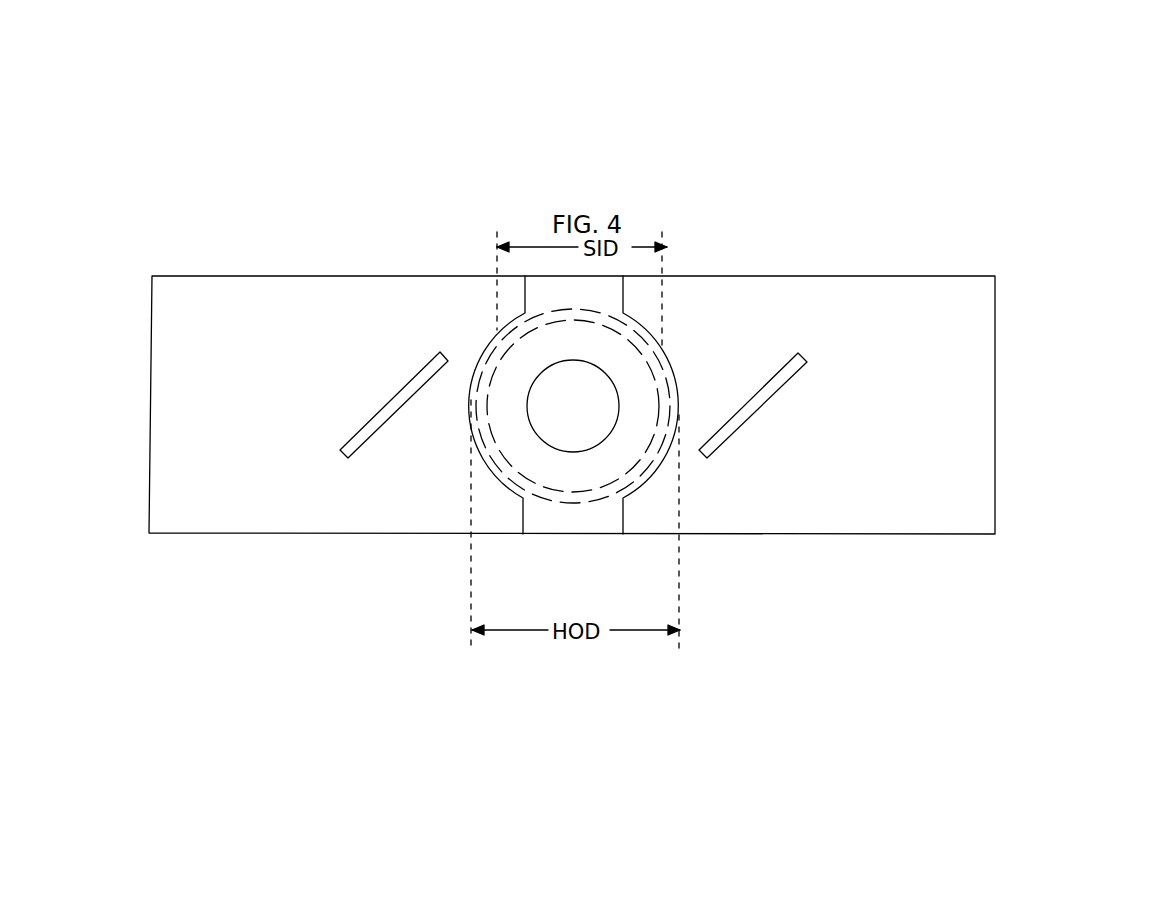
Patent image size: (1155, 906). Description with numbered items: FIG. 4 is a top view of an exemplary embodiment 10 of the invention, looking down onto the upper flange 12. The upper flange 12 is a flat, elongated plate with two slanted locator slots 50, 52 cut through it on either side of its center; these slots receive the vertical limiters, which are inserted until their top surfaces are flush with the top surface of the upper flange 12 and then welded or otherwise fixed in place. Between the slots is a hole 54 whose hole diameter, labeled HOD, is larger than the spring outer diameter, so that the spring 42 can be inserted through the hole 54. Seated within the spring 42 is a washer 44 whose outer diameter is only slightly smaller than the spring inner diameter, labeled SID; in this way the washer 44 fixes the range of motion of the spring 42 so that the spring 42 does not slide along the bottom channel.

The strap assembly 10 is at (965, 113).
The upper flange 12 is at (943, 338).
The spring 42 is at (567, 310).
The washer 44 is at (617, 353).
The locator slot 50 is at (762, 403).
The locator slot 52 is at (382, 408).
The hole 54 is at (650, 480).